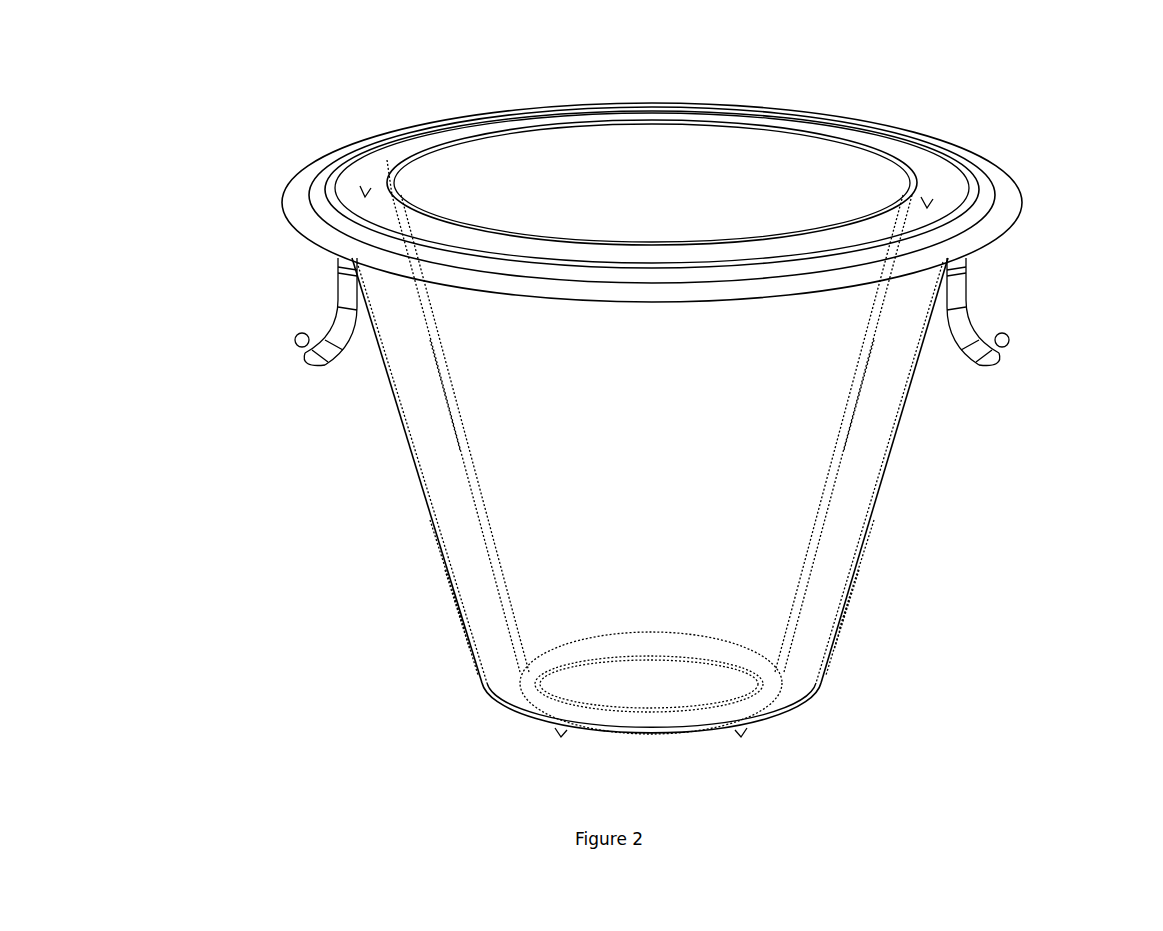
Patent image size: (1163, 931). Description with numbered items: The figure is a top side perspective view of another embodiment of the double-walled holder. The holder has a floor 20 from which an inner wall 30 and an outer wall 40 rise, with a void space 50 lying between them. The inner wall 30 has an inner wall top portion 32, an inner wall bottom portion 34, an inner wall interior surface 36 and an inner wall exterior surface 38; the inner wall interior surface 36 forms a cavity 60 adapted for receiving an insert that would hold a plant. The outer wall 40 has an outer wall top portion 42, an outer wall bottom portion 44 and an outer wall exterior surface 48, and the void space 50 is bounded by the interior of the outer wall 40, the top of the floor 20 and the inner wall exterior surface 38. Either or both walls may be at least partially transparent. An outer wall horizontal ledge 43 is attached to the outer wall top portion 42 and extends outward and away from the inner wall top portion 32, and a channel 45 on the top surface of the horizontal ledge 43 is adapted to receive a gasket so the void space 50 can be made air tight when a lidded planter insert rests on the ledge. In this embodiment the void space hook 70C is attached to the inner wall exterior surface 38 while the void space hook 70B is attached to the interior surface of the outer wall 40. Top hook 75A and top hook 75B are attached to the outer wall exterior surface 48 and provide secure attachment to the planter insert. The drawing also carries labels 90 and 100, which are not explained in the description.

The floor 20 is at (512, 688).
The inner wall 30 is at (450, 420).
The inner wall top portion 32 is at (398, 215).
The inner wall bottom portion 34 is at (497, 570).
The inner wall interior surface 36 is at (478, 472).
The inner wall exterior surface 38 is at (462, 472).
The outer wall 40 is at (435, 540).
The outer wall top portion 42 is at (345, 212).
The outer wall horizontal ledge 43 is at (1010, 207).
The outer wall bottom portion 44 is at (470, 647).
The channel 45 is at (990, 182).
The outer wall exterior surface 48 is at (455, 603).
The void space 50 is at (387, 160).
The cavity 60 is at (652, 213).
The void space hook 70B is at (362, 188).
The void space hook 70C is at (929, 204).
The top hook 75A is at (1009, 343).
The top hook 75B is at (297, 346).
The bottom center 90 is at (650, 740).
The feet 100 is at (508, 720).